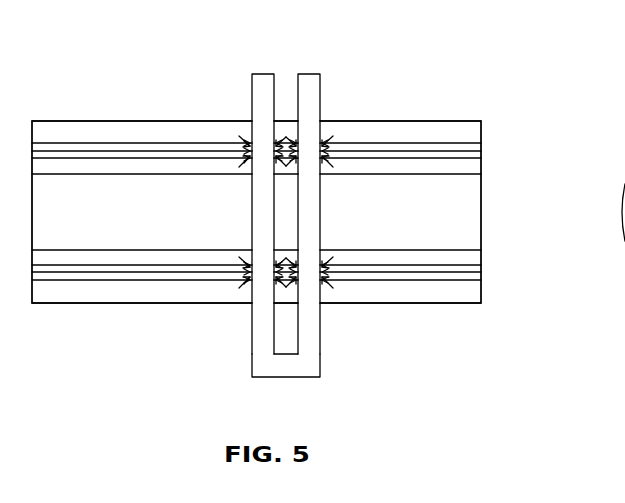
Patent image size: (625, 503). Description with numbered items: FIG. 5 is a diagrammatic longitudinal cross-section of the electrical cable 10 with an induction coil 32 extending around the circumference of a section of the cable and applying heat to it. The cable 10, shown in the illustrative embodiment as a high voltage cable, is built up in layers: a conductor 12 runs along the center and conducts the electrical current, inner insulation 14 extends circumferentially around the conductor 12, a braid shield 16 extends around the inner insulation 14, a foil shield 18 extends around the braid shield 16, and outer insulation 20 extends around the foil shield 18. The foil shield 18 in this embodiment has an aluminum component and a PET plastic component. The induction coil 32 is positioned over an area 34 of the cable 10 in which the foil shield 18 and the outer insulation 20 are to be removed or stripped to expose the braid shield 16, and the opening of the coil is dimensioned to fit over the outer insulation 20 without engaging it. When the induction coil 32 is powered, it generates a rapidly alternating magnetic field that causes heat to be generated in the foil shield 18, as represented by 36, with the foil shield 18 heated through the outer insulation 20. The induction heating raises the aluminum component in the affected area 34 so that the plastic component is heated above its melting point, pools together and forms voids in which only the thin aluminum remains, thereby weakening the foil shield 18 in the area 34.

The electrical cable 10 is at (436, 58).
The conductor 12 is at (482, 221).
The inner insulation 14 is at (482, 166).
The braid shield 16 is at (482, 152).
The foil shield 18 is at (482, 147).
The outer insulation 20 is at (460, 127).
The induction coil 32 is at (263, 72).
The area 34 is at (250, 304).
The heat 36 is at (295, 150).